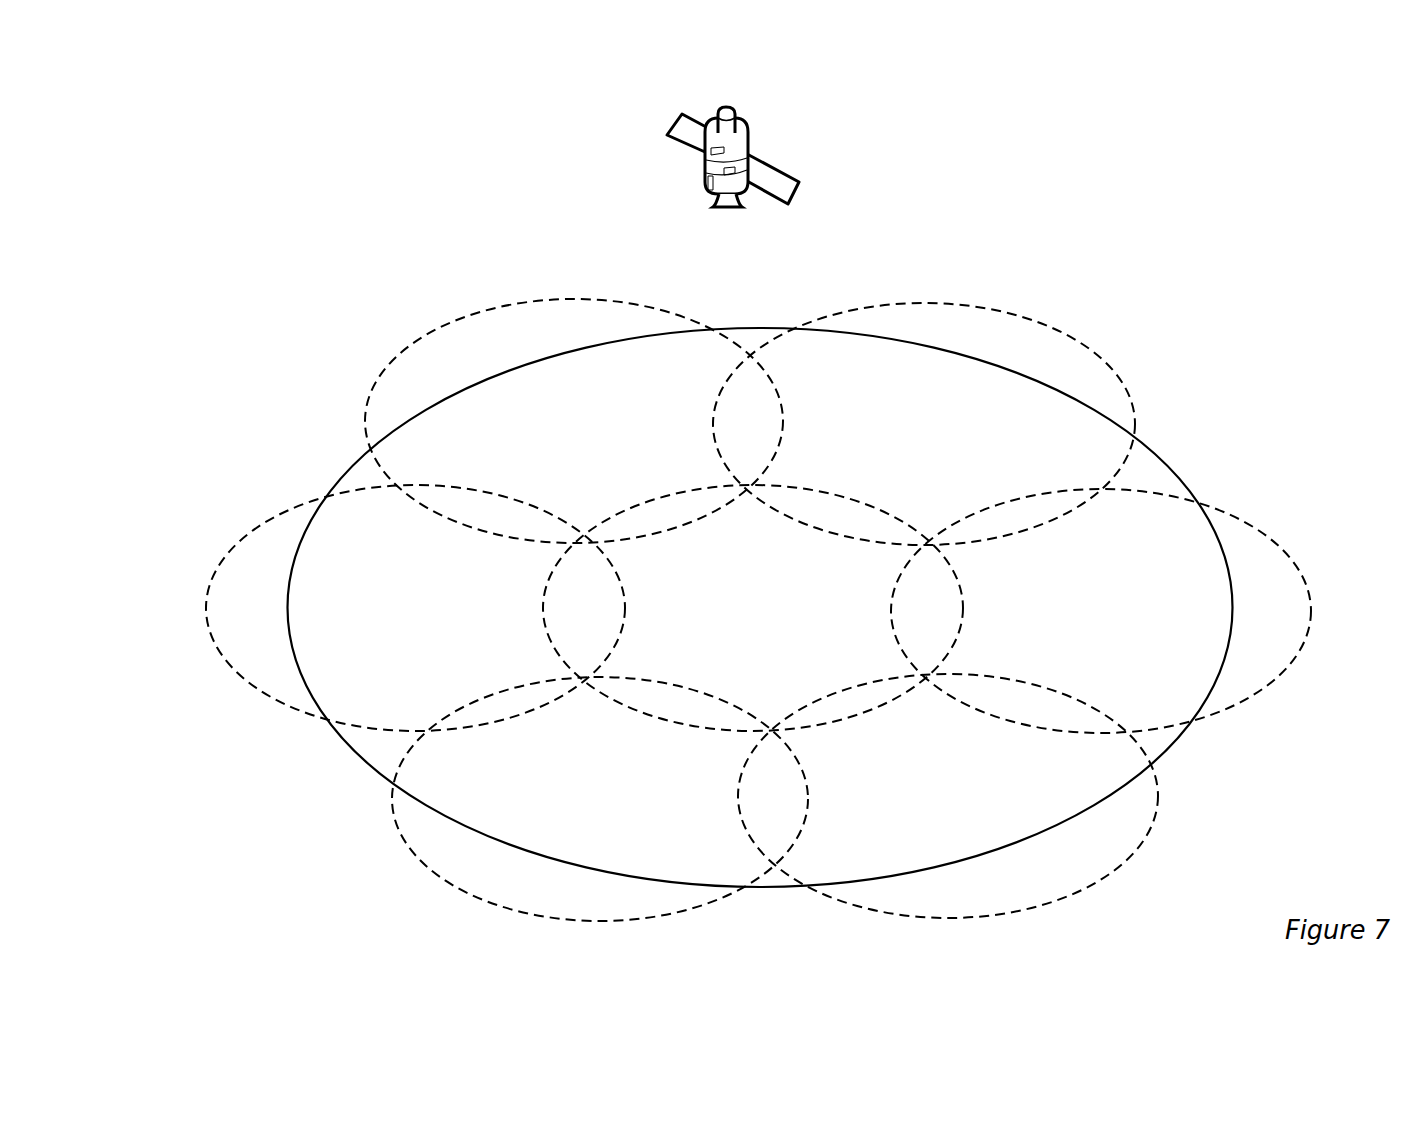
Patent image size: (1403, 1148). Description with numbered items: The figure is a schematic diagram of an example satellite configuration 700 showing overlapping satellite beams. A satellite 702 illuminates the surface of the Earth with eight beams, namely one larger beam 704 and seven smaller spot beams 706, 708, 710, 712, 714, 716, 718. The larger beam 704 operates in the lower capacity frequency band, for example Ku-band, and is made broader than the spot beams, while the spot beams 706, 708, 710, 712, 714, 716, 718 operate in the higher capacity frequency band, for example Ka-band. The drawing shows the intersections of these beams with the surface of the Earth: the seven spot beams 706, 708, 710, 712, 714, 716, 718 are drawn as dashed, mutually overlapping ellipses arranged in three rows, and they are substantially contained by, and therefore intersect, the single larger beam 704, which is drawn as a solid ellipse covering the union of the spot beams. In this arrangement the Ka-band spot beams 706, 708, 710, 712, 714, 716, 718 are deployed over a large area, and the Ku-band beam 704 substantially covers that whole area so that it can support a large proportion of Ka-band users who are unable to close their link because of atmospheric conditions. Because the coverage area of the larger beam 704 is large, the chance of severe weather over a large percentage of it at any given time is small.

The satellite configuration 700 is at (291, 160).
The satellite 702 is at (769, 153).
The larger beam 704 is at (347, 470).
The spot beam 706 is at (587, 431).
The spot beam 708 is at (946, 431).
The spot beam 710 is at (428, 618).
The spot beam 712 is at (767, 618).
The spot beam 714 is at (1127, 618).
The spot beam 716 is at (616, 809).
The spot beam 718 is at (967, 808).